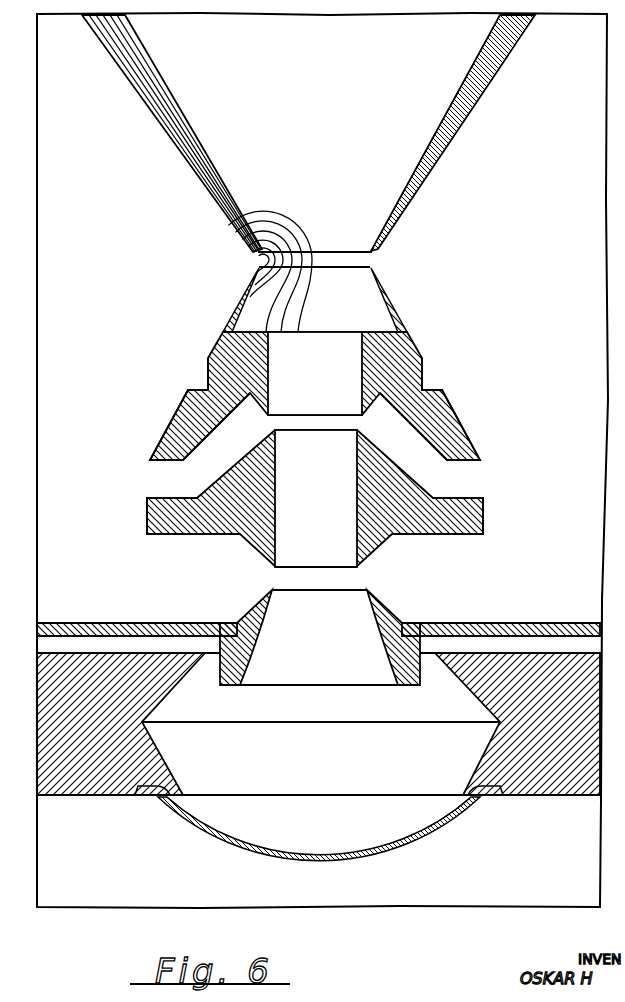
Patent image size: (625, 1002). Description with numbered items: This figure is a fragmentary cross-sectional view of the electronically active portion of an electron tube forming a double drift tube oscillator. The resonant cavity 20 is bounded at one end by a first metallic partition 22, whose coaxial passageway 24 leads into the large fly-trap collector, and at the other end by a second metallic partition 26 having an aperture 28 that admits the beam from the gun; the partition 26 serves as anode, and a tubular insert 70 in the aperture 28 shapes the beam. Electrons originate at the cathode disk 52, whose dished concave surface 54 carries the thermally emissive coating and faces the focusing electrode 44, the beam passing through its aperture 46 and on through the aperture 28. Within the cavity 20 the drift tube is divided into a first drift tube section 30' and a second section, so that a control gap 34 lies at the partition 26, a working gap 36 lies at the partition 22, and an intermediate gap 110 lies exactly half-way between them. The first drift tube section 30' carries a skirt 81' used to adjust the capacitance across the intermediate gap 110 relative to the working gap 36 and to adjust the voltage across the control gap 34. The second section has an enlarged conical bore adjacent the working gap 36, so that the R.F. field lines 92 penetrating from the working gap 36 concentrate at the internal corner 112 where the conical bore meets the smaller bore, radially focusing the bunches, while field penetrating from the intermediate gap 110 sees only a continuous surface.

The resonant cavity compartment 20 is at (519, 235).
The first metallic partition 22 is at (437, 148).
The passageway 24 is at (326, 142).
The second metallic partition 26 is at (466, 623).
The aperture 28 is at (330, 644).
The first drift tube section 30' is at (315, 499).
The control gap 34 is at (297, 573).
The working gap 36 is at (345, 265).
The focusing electrode 44 is at (487, 756).
The aperture 46 is at (330, 721).
The cathode disk 52 is at (212, 836).
The concave surface 54 is at (317, 842).
The tubular insert 70 is at (390, 609).
The skirt 81' is at (344, 516).
The field lines 92 is at (270, 262).
The intermediate gap 110 is at (285, 421).
The internal corner 112 is at (360, 332).